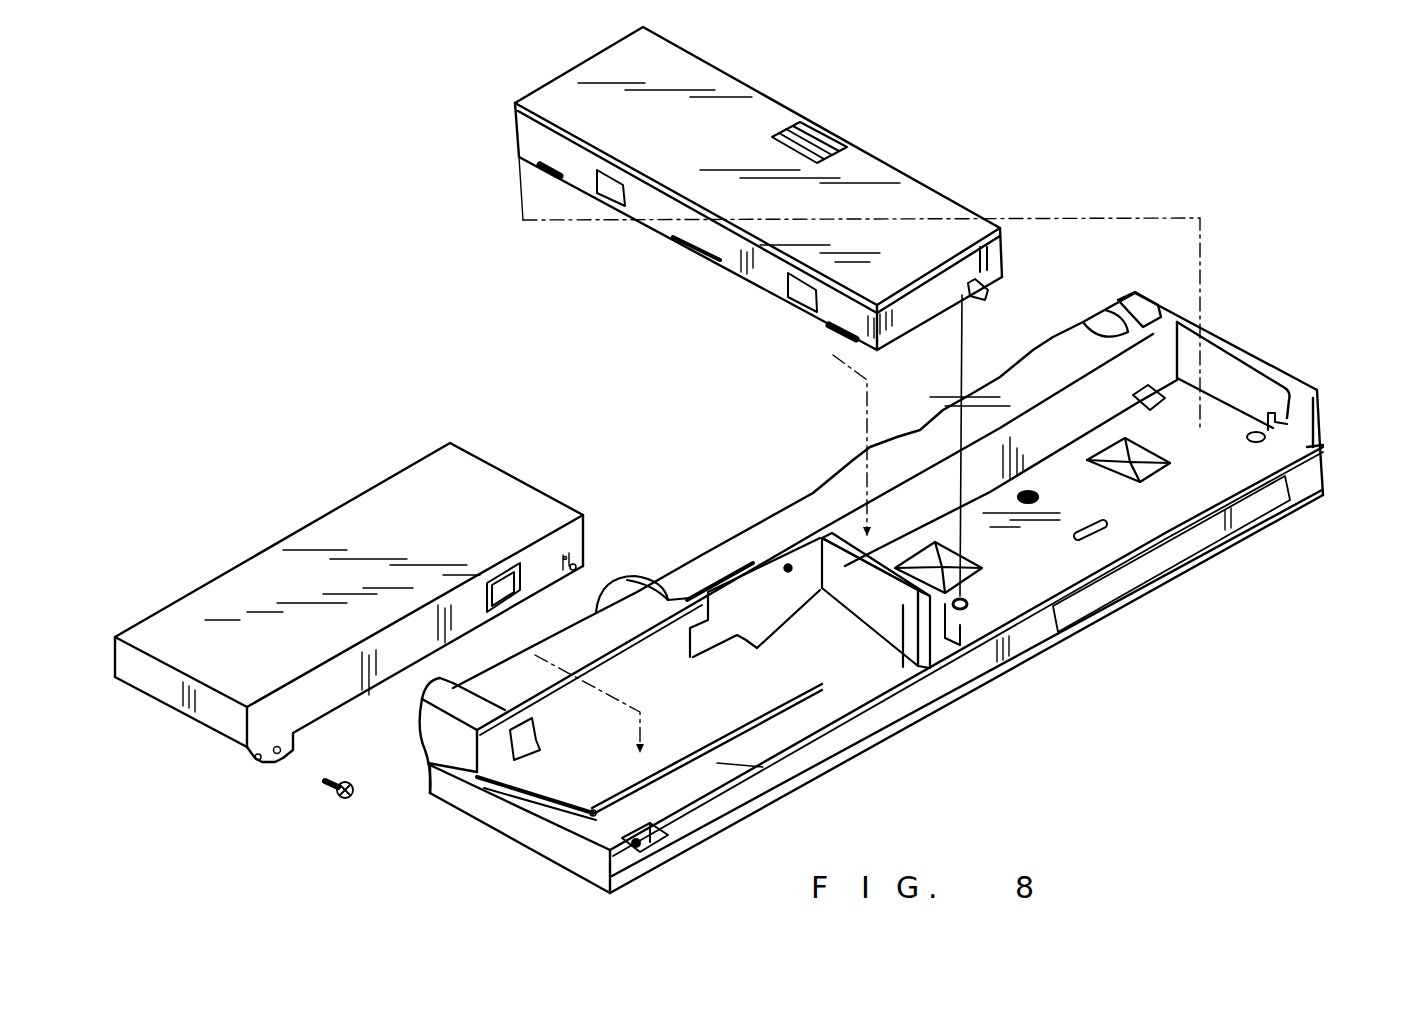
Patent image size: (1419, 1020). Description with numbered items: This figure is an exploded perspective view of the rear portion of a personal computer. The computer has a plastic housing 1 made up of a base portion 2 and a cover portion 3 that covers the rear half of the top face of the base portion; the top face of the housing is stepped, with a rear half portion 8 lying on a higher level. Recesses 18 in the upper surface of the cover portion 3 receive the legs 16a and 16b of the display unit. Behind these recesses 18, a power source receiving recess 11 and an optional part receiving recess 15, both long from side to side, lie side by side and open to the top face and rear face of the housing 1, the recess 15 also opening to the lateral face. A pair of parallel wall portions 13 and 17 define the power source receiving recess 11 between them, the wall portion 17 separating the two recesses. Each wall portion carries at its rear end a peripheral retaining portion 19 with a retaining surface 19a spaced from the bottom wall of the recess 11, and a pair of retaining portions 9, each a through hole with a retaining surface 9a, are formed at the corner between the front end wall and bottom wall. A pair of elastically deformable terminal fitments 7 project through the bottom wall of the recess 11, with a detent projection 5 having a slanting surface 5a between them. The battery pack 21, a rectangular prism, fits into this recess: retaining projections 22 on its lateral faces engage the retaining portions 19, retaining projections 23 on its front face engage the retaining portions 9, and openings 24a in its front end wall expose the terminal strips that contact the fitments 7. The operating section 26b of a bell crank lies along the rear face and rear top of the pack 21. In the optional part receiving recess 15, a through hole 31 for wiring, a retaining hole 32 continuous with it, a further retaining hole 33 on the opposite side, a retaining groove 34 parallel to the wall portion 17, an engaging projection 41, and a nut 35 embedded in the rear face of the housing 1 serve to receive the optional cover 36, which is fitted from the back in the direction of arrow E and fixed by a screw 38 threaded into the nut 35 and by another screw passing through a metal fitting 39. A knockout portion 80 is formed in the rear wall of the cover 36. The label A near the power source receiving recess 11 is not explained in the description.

The housing 1 is at (568, 882).
The base portion 2 is at (487, 828).
The cover portion 3 is at (425, 760).
The detent projection 5 is at (1085, 535).
The slanting surface 5a is at (1098, 522).
The terminal fitments 7 is at (935, 555).
The rear half portion 8 is at (808, 510).
The peripheral retaining portions 9 is at (1150, 392).
The retaining surface 9a is at (1133, 400).
The power source receiving recess 11 is at (1157, 520).
The wall portion 13 is at (1250, 385).
The optional part receiving recess 15 is at (750, 700).
The leg 16a is at (1105, 335).
The leg 16b is at (628, 578).
The wall portion 17 is at (865, 600).
The recesses 18 is at (420, 705).
The peripheral retaining portion 19 is at (968, 605).
The retaining surface 19a is at (1322, 447).
The battery pack 21 is at (905, 185).
The retaining projection 22 is at (985, 292).
The retaining projections 23 is at (540, 170).
The openings 24a is at (620, 185).
The operating section 26b is at (820, 140).
The through hole 31 is at (760, 580).
The retaining hole 32 is at (692, 640).
The retaining hole 33 is at (540, 750).
The retaining groove 34 is at (520, 830).
The nut 35 is at (655, 848).
The optional cover 36 is at (322, 530).
The screw 38 is at (335, 800).
The metal fitting 39 is at (575, 572).
The engaging projection 41 is at (788, 572).
The knockout portion 80 is at (505, 580).
The region A is at (1082, 562).
The arrow E is at (657, 699).